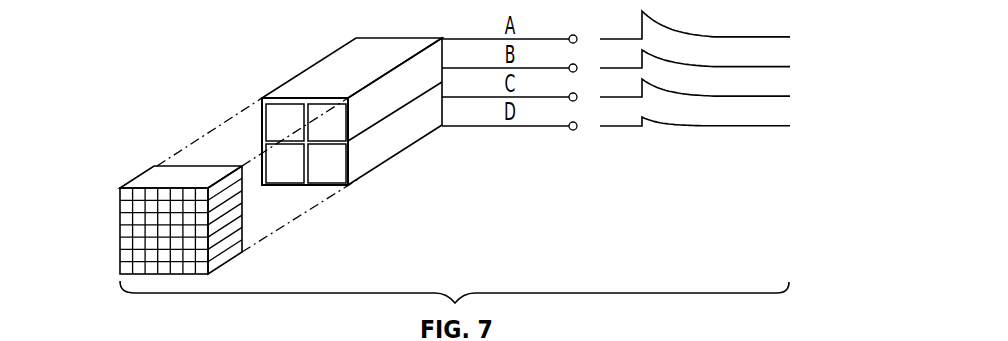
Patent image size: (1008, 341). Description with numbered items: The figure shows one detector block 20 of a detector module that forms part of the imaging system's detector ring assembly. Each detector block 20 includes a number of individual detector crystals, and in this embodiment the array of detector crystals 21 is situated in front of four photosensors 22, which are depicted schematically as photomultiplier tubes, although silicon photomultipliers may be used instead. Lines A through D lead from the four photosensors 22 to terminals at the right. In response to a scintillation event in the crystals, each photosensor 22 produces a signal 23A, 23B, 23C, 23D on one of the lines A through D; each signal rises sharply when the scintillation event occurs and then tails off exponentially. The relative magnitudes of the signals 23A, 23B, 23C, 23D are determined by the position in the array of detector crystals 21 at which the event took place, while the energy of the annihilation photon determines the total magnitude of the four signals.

The detector block 20 is at (352, 94).
The array of detector crystals 21 is at (120, 236).
The photosensors 22 is at (402, 101).
The signal 23A is at (770, 39).
The signal 23B is at (770, 68).
The signal 23C is at (770, 97).
The signal 23D is at (770, 126).